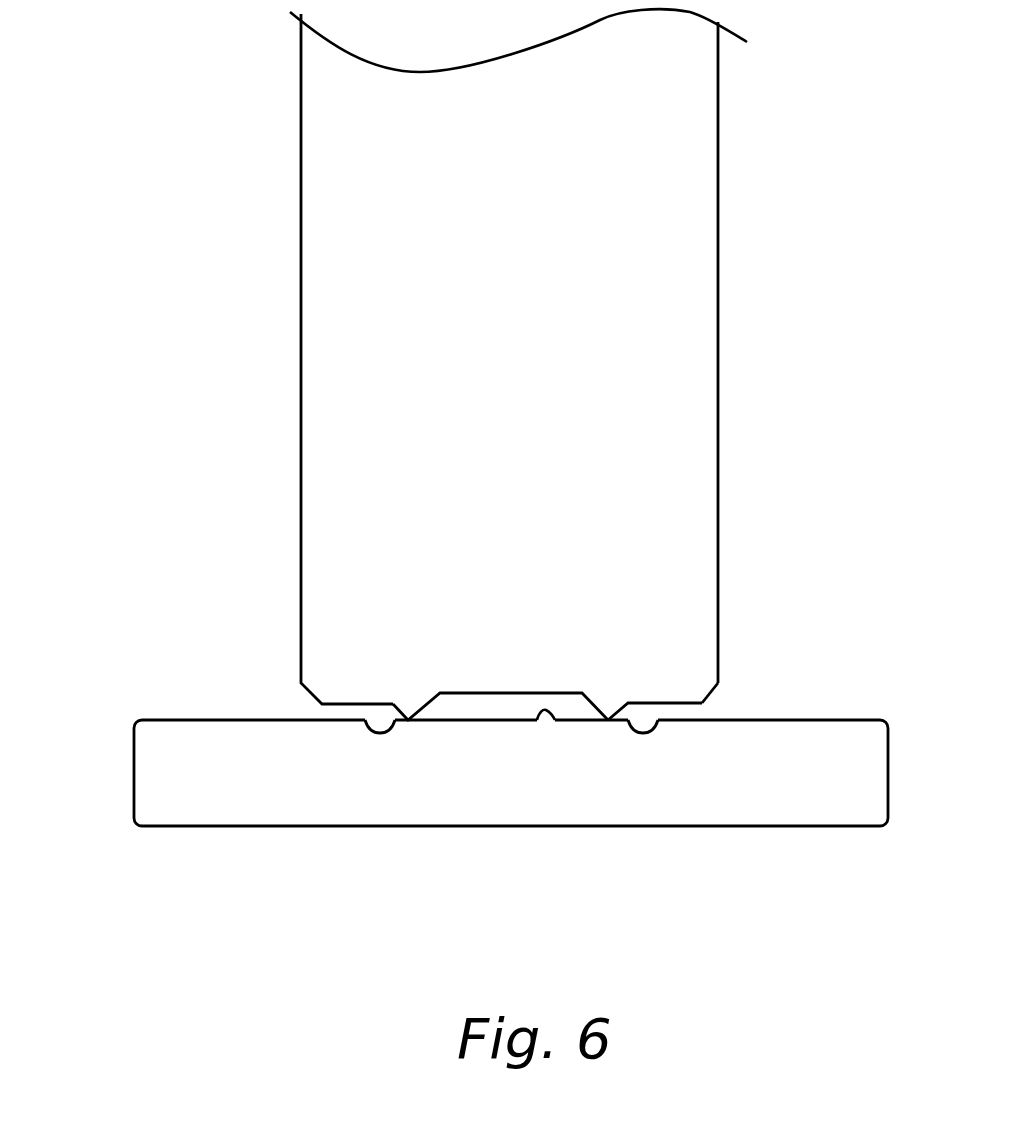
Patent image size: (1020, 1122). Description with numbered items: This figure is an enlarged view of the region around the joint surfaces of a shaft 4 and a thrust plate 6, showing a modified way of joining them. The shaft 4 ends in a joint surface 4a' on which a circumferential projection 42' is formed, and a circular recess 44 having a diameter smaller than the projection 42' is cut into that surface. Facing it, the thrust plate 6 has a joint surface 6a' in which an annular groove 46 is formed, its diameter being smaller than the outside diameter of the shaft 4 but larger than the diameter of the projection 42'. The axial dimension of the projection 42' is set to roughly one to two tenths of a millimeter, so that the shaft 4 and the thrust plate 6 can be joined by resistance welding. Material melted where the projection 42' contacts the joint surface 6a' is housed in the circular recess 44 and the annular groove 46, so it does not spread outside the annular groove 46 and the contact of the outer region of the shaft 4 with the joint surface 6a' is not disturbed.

The shaft 4 is at (611, 207).
The circular recess 44 is at (479, 698).
The circumferential projection 42' is at (719, 570).
The joint surface of the shaft 4a' is at (783, 617).
The thrust plate 6 is at (190, 786).
The annular groove 46 is at (378, 733).
The joint surface of the thrust plate 6a' is at (603, 838).